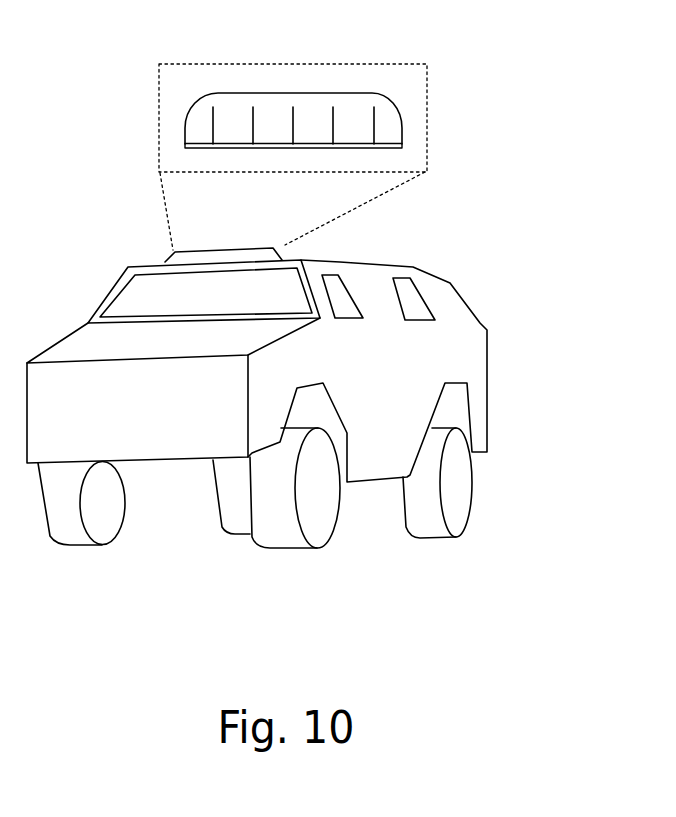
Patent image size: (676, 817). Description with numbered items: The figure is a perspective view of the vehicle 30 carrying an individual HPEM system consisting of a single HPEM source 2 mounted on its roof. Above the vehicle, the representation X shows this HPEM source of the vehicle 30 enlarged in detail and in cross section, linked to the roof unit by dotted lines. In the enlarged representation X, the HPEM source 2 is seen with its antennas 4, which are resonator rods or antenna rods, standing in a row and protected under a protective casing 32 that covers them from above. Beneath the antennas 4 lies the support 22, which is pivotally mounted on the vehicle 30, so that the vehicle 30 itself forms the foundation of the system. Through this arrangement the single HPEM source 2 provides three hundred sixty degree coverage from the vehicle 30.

The HPEM source 2 is at (210, 252).
The antennas 4 is at (213, 130).
The support 22 is at (378, 148).
The vehicle 30 is at (488, 385).
The protective casing 32 is at (348, 94).
The representation X is at (427, 133).